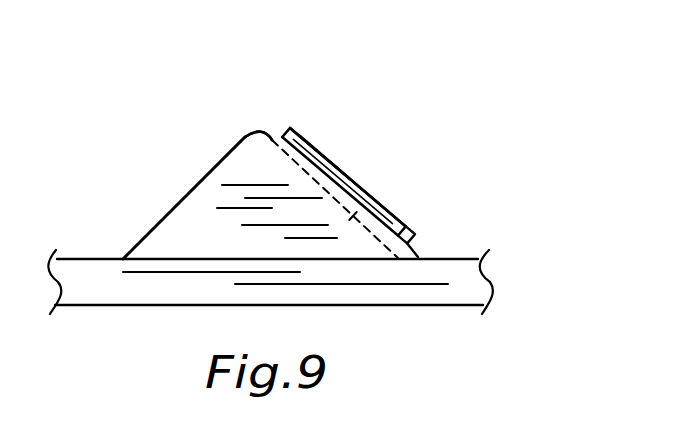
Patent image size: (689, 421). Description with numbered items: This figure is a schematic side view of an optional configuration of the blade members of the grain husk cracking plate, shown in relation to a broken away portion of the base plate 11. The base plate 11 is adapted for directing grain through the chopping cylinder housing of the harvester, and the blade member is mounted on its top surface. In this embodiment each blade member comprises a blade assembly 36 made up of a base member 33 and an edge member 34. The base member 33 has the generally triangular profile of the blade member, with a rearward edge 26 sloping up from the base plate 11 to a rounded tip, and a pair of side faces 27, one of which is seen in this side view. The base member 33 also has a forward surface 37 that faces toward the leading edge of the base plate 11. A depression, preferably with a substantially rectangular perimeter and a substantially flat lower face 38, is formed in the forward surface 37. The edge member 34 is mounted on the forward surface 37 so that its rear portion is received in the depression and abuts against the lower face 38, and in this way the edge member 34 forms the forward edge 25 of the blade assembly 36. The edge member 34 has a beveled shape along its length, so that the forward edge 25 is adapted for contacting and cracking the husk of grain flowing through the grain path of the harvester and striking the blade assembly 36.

The base plate 11 is at (472, 285).
The base member 33 is at (197, 228).
The rearward edge 26 is at (214, 166).
The side faces 27 is at (256, 157).
The forward edge 25 is at (295, 133).
The edge member 34 is at (350, 180).
The lower face 38 is at (374, 200).
The forward surface 37 is at (408, 226).
The blade assembly 36 is at (320, 152).